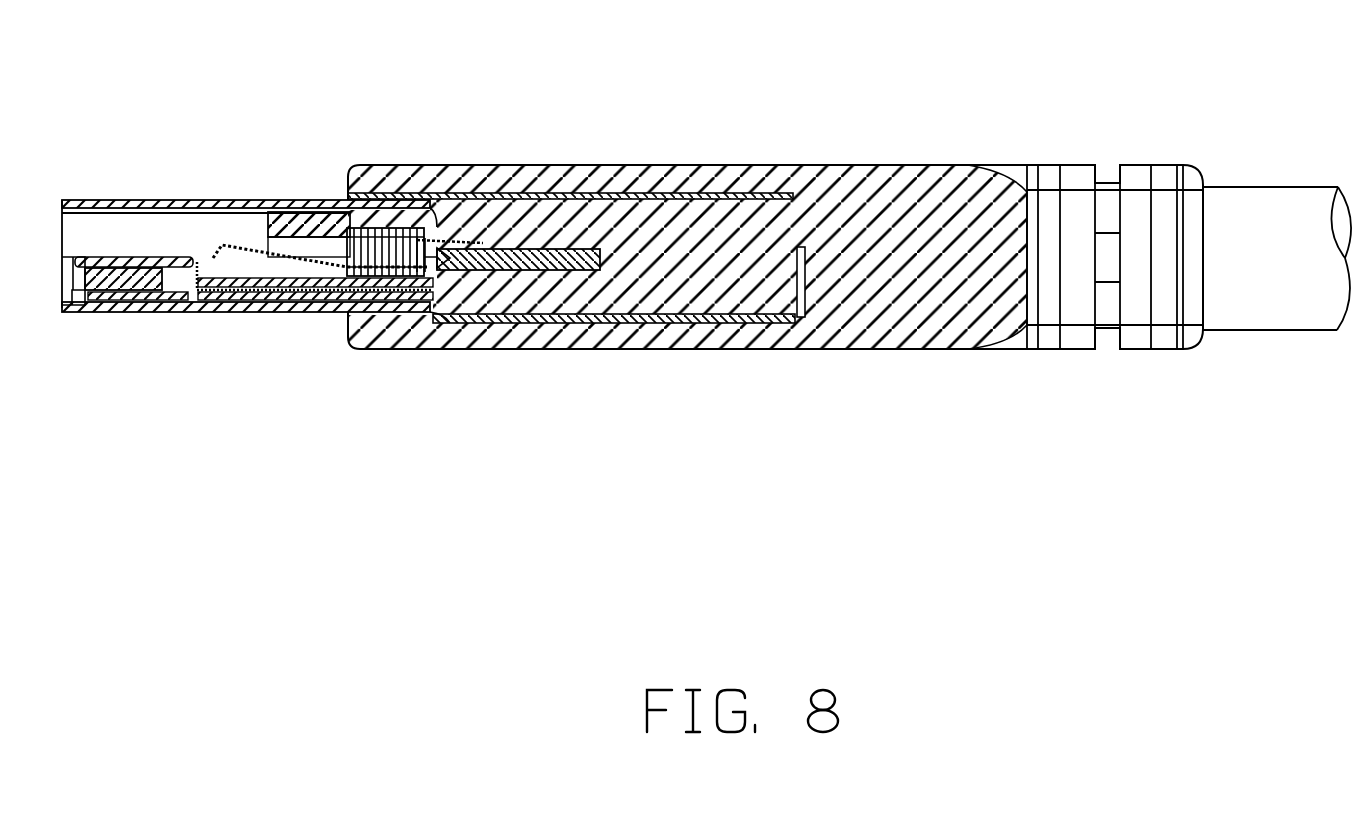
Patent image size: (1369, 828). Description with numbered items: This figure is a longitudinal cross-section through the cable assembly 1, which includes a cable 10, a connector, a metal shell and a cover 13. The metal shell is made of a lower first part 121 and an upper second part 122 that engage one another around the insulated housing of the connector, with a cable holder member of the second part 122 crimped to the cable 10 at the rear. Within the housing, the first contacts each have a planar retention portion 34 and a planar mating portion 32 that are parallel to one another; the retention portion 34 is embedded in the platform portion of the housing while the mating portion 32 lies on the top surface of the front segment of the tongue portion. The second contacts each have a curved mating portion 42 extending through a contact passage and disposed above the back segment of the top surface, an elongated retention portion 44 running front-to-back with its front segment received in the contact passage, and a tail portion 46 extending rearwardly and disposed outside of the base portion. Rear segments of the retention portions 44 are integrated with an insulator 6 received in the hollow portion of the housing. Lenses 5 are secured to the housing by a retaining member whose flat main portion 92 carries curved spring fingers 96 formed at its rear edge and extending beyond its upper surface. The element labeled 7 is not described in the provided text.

The cable assembly 1 is at (648, 90).
The cable 10 is at (1255, 230).
The cover 13 is at (520, 185).
The first part 121 is at (315, 315).
The second part 122 is at (715, 197).
The insulative block 7 is at (580, 250).
The insulator 6 is at (363, 230).
The tail portion 46 is at (457, 240).
The retention portion 44 is at (292, 235).
The mating portion 42 is at (242, 245).
The lenses 5 is at (155, 270).
The mating portion 32 is at (113, 262).
The retention portion 34 is at (232, 312).
The main portion 92 is at (105, 312).
The spring fingers 96 is at (143, 312).